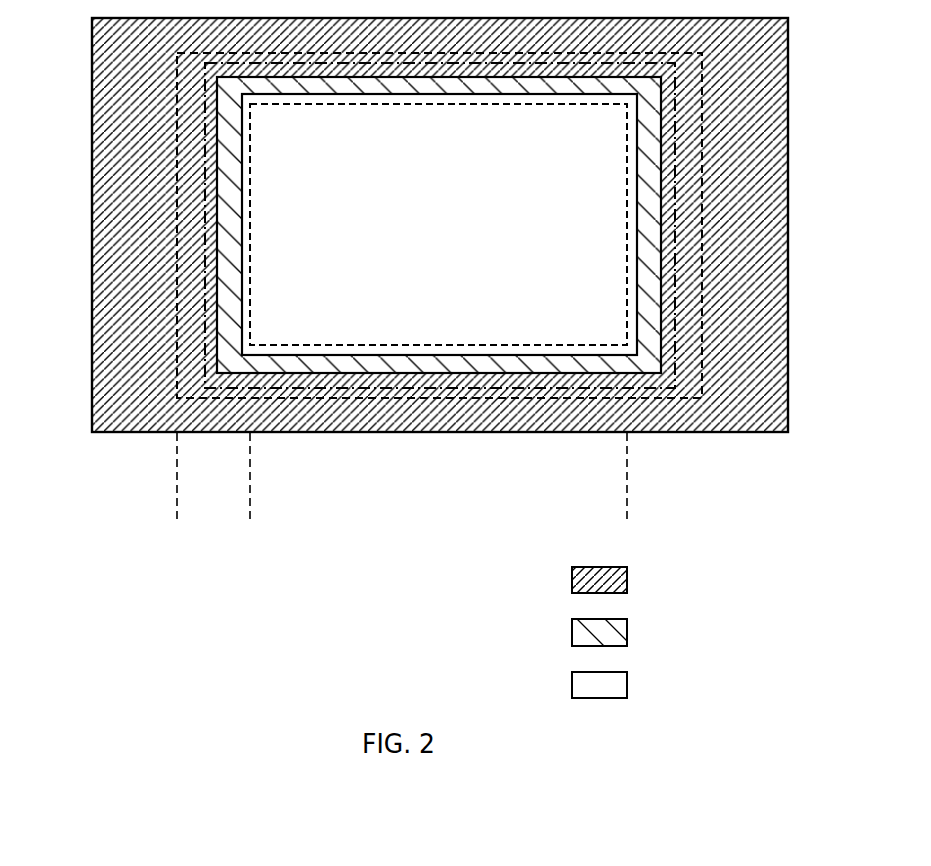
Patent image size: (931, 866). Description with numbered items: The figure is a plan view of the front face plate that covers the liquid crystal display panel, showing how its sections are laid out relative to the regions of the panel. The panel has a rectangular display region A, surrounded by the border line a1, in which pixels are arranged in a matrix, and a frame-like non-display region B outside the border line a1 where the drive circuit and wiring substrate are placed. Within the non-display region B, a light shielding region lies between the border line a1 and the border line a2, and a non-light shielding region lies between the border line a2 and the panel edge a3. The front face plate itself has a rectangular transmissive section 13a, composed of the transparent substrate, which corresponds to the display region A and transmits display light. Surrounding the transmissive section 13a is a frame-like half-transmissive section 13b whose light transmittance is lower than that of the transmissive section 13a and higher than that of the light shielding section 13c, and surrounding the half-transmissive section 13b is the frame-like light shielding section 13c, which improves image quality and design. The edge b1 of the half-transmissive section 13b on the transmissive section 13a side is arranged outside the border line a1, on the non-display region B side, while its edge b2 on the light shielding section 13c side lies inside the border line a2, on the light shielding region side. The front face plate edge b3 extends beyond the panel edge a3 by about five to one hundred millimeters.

The transmissive section 13a is at (457, 396).
The half-transmissive section 13b is at (445, 361).
The light shielding section 13c is at (440, 305).
The border line a1 is at (640, 163).
The border line a2 is at (676, 214).
The panel edge a3 is at (703, 268).
The edge of the half-transmissive section on the transmissive section side b1 is at (210, 183).
The edge of the half-transmissive section on the light shielding section side b2 is at (207, 238).
The front face plate edge b3 is at (92, 283).
The display region A is at (627, 522).
The non-display region B is at (250, 522).